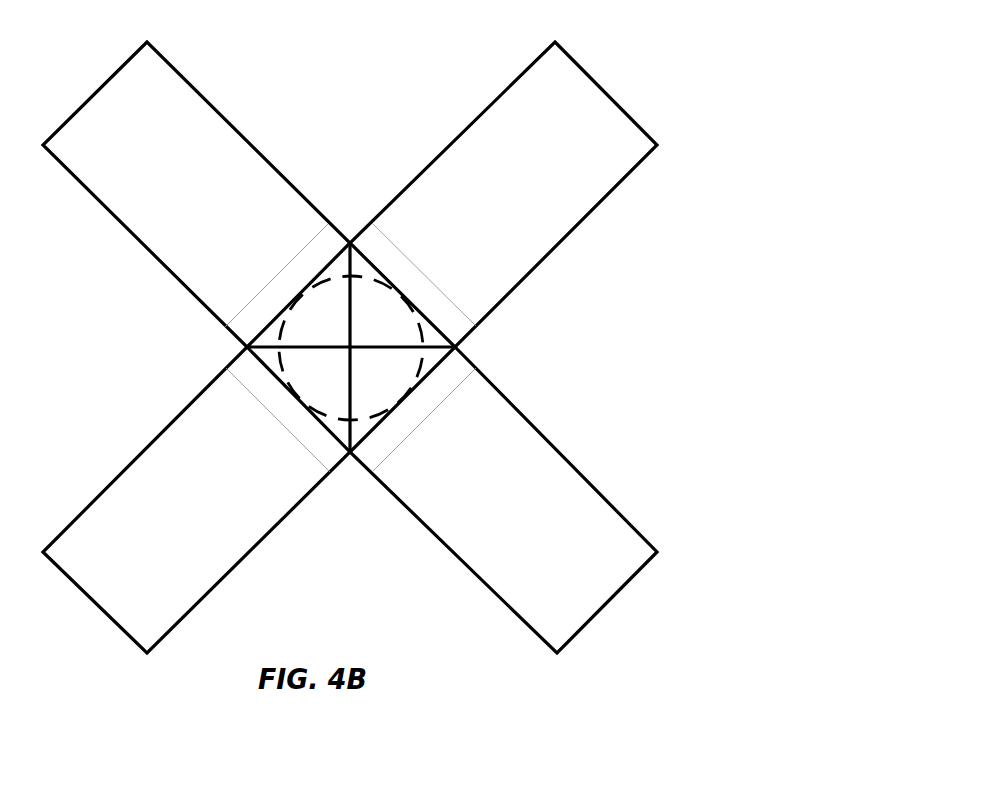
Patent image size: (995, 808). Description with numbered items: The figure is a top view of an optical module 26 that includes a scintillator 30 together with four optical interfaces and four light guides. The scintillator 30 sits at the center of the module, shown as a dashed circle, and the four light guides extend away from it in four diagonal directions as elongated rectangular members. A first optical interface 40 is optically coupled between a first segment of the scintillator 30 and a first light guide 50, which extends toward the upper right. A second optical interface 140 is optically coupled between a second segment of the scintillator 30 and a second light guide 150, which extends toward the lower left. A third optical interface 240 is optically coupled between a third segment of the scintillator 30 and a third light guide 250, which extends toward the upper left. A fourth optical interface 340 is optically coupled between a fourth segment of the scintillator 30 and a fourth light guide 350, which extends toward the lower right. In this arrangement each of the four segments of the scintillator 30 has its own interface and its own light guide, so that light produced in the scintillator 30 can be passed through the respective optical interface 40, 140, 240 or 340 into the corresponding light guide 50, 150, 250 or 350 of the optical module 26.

The optical module 26 is at (350, 368).
The scintillator 30 is at (372, 273).
The first optical interface 40 is at (457, 337).
The first light guide 50 is at (569, 157).
The second optical interface 140 is at (345, 447).
The second light guide 150 is at (169, 562).
The third optical interface 240 is at (273, 337).
The third light guide 250 is at (167, 134).
The fourth optical interface 340 is at (457, 387).
The fourth light guide 350 is at (591, 579).